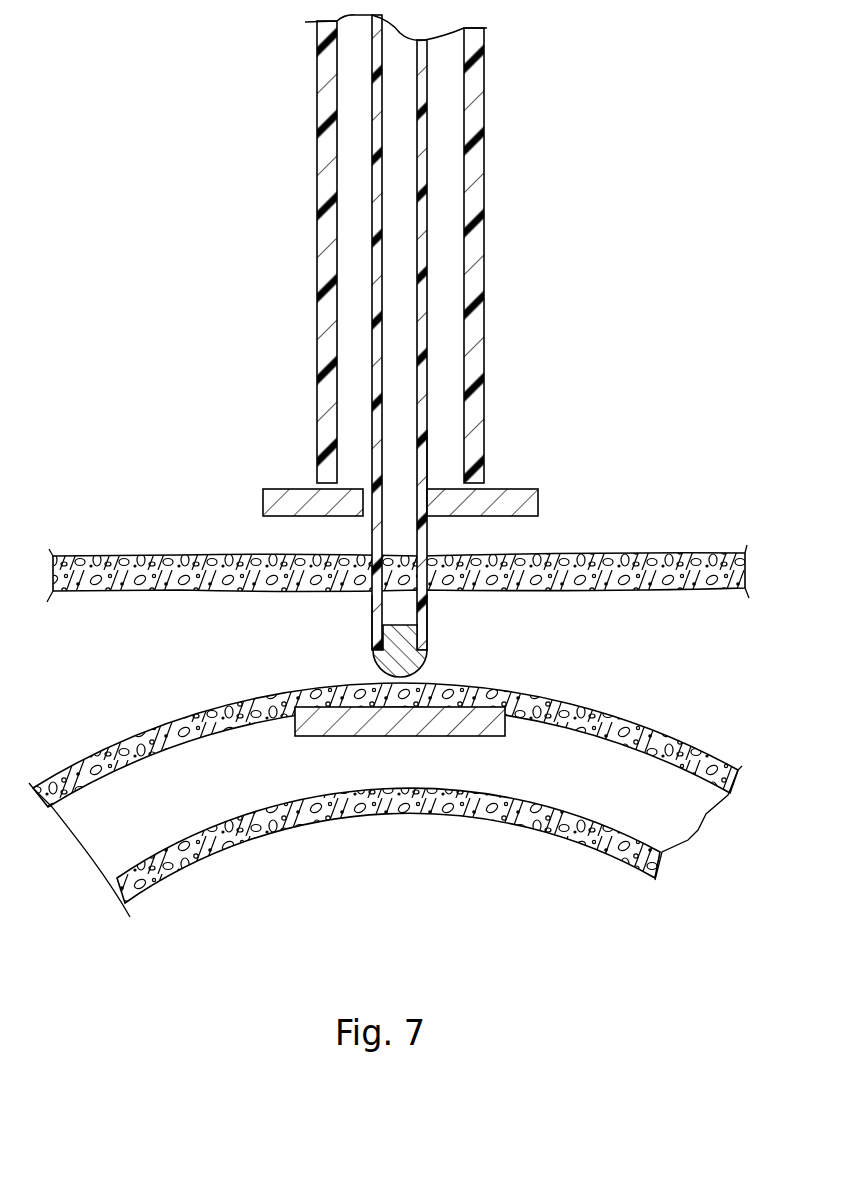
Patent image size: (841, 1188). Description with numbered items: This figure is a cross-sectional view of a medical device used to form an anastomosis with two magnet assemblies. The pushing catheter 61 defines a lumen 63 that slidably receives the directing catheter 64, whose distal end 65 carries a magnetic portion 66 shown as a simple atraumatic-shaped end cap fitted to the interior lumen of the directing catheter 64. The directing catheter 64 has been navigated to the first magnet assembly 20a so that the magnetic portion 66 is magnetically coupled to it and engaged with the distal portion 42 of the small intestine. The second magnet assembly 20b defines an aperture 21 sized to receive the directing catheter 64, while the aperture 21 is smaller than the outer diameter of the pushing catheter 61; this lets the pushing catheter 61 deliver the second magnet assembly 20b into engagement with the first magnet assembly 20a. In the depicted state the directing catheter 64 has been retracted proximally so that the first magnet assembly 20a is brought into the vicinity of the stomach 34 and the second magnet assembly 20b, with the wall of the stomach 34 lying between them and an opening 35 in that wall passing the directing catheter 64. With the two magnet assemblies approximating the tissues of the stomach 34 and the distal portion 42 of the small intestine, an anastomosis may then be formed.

The pushing catheter 61 is at (317, 113).
The lumen 63 is at (330, 262).
The directing catheter 64 is at (372, 315).
The aperture 21 is at (432, 482).
The second magnet assembly 20b is at (502, 487).
The stomach 34 is at (665, 553).
The distal end 65 is at (373, 607).
The magnetic portion 66 is at (375, 651).
The opening in tissue wall 35 is at (427, 597).
The distal portion of the small intestine 42 is at (210, 853).
The first magnet assembly 20a is at (395, 737).